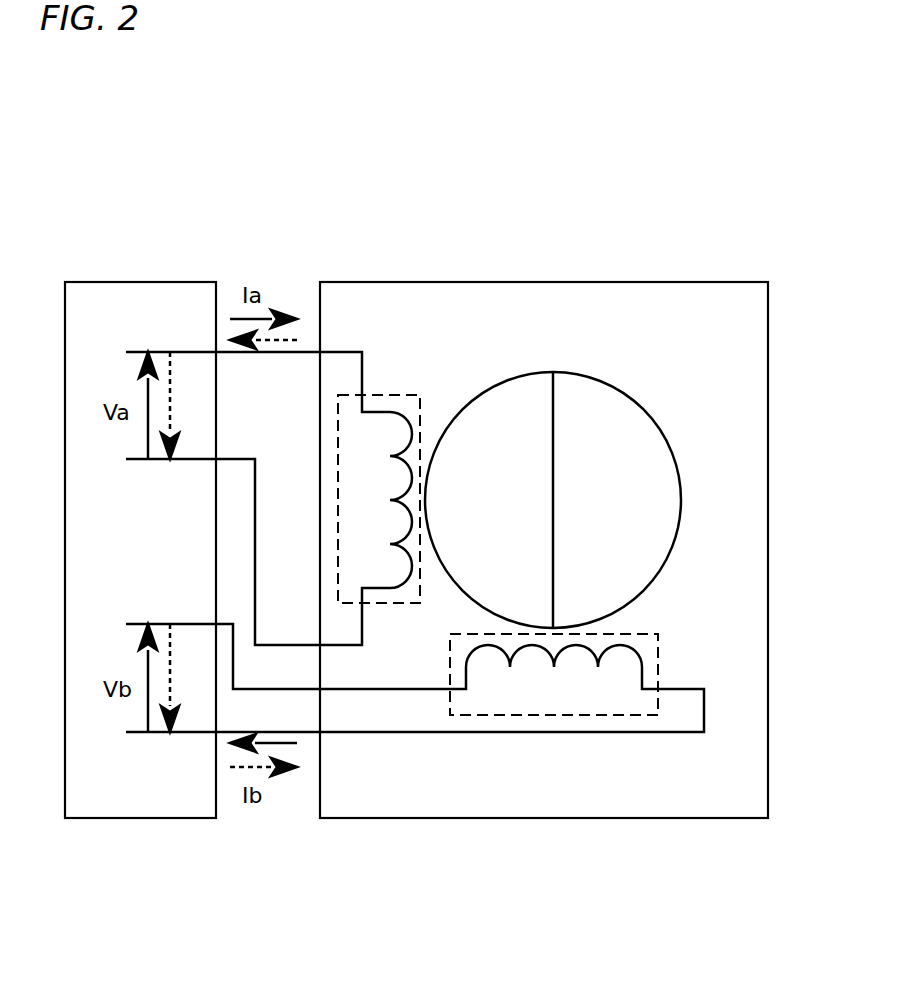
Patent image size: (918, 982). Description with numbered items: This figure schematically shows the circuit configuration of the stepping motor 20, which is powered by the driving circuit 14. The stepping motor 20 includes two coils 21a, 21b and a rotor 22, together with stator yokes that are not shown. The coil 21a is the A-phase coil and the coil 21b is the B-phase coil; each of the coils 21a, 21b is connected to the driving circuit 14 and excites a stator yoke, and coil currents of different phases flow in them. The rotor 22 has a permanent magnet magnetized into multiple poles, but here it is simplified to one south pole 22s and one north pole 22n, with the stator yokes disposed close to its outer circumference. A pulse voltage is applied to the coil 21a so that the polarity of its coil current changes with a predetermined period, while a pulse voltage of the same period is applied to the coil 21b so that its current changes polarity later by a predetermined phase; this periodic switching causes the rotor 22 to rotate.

The driving circuit 14 is at (160, 282).
The stepping motor 20 is at (630, 282).
The coil 21a is at (398, 397).
The coil 21b is at (658, 657).
The rotor 22 is at (590, 468).
The south pole 22s is at (497, 413).
The north pole 22n is at (632, 543).